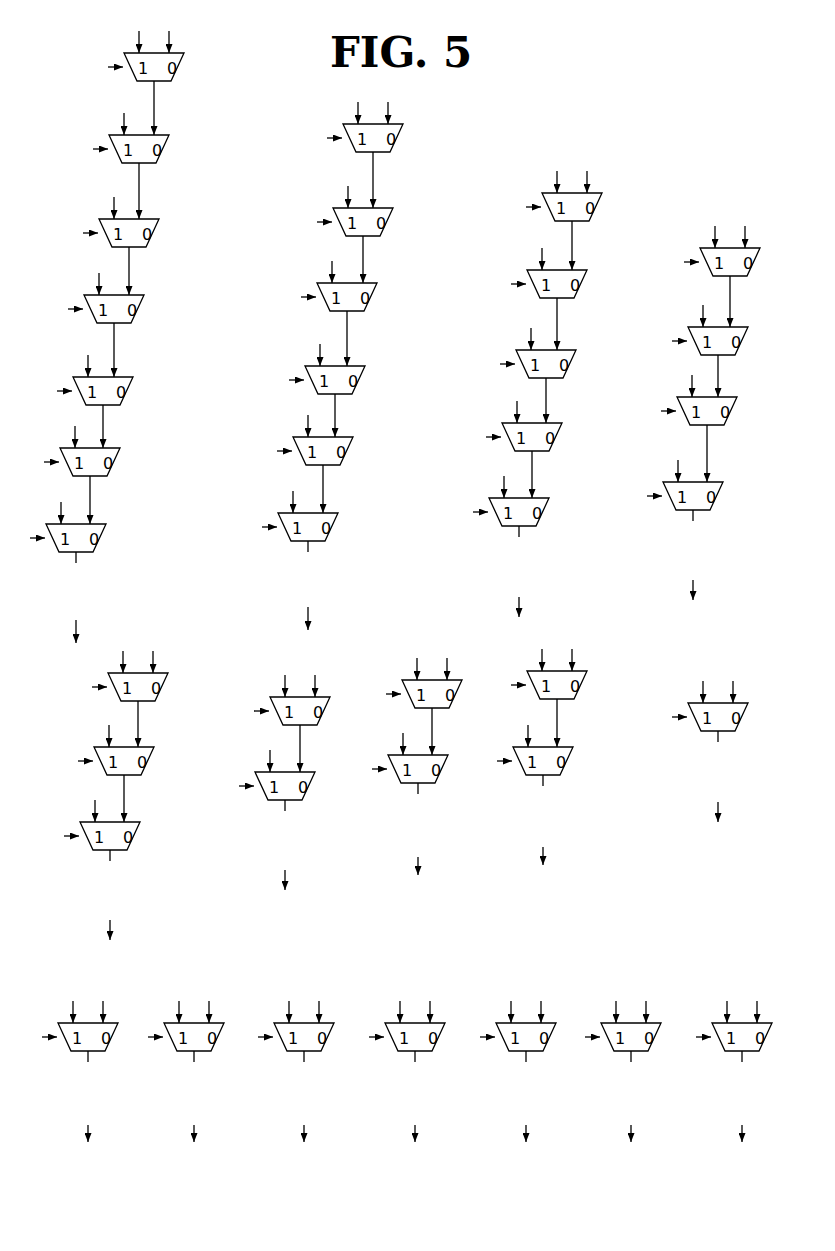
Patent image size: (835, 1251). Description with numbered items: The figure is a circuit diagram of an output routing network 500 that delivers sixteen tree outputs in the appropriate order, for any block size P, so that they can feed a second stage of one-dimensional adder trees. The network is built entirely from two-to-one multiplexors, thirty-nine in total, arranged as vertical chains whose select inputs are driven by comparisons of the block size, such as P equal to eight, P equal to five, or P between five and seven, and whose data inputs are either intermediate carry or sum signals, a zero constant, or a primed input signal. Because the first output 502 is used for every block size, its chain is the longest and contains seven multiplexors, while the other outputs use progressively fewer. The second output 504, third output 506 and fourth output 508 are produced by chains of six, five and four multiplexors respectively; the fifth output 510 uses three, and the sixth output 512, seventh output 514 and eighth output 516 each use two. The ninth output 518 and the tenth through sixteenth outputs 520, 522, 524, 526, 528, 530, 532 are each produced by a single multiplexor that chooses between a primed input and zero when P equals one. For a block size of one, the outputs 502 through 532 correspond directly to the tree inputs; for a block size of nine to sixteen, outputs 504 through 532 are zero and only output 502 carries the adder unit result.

The output routing network 500 is at (649, 56).
The first tree output 502 is at (97, 598).
The second tree output 504 is at (327, 590).
The third tree output 506 is at (538, 572).
The fourth tree output 508 is at (712, 557).
The fifth tree output 510 is at (135, 887).
The sixth tree output 512 is at (292, 887).
The seventh tree output 514 is at (417, 882).
The eighth tree output 516 is at (570, 843).
The ninth tree output 518 is at (716, 860).
The tenth tree output 520 is at (88, 1152).
The eleventh tree output 522 is at (194, 1152).
The twelfth tree output 524 is at (304, 1152).
The thirteenth tree output 526 is at (415, 1152).
The fourteenth tree output 528 is at (526, 1152).
The fifteenth tree output 530 is at (631, 1152).
The sixteenth tree output 532 is at (742, 1152).